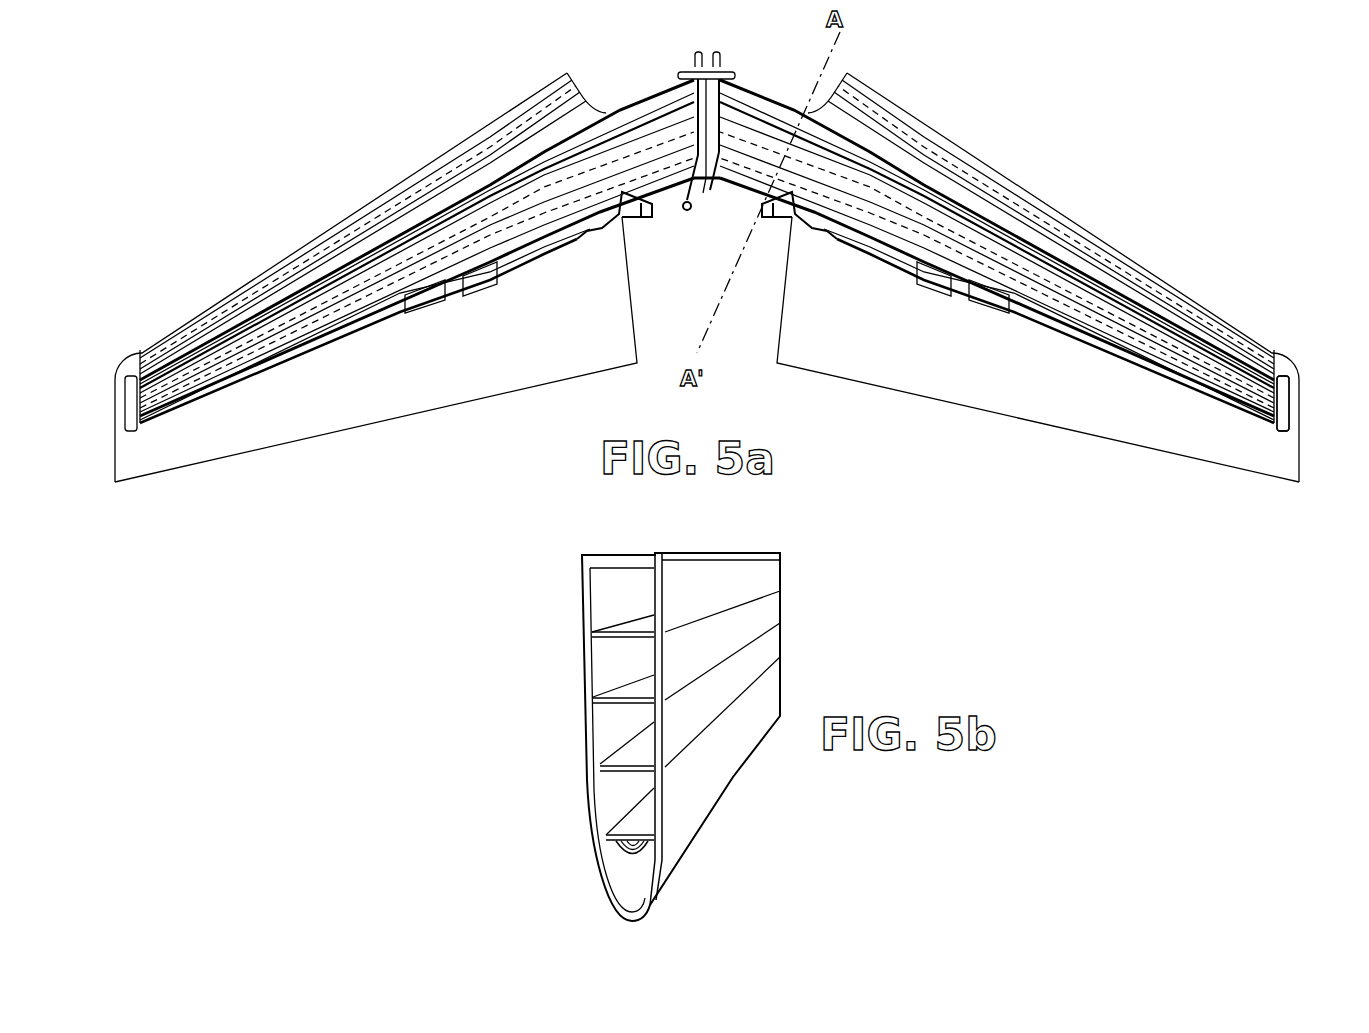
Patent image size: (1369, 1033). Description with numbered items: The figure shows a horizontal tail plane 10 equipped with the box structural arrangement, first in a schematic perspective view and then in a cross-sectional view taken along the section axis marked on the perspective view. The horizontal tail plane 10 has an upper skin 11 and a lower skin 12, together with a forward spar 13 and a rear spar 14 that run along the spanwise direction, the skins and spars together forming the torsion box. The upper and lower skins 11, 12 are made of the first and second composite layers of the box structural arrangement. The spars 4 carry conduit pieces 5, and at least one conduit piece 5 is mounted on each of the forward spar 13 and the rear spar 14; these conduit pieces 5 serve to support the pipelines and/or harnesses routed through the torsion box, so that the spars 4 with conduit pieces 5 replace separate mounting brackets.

In FIG. 5a, the horizontal tail plane 10 is at (358, 166).
In FIG. 5a, the upper skin 11 is at (1155, 277).
In FIG. 5b, the upper skin 11 is at (757, 652).
In FIG. 5a, the lower skin 12 is at (963, 306).
In FIG. 5b, the lower skin 12 is at (582, 667).
In FIG. 5a, the forward spar 13 is at (1190, 333).
In FIG. 5b, the forward spar 13 is at (612, 568).
In FIG. 5a, the rear spar 14 is at (1255, 420).
In FIG. 5b, the rear spar 14 is at (604, 837).
In FIG. 5a, the spar 4 is at (998, 203).
In FIG. 5a, the conduit piece 5 is at (1023, 257).
In FIG. 5b, the conduit piece 5 is at (624, 851).